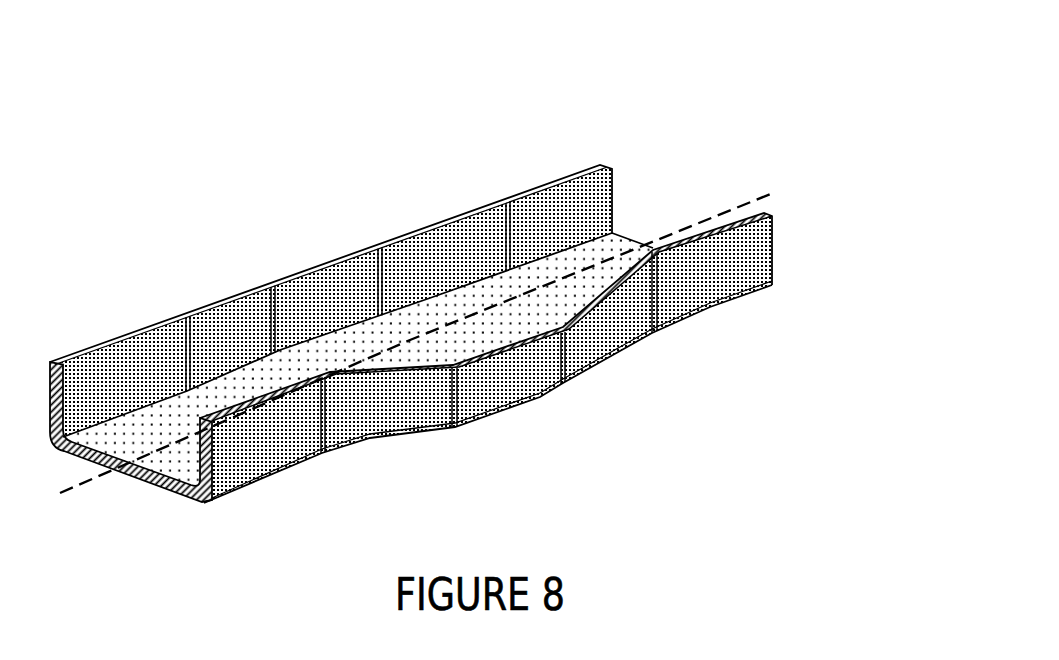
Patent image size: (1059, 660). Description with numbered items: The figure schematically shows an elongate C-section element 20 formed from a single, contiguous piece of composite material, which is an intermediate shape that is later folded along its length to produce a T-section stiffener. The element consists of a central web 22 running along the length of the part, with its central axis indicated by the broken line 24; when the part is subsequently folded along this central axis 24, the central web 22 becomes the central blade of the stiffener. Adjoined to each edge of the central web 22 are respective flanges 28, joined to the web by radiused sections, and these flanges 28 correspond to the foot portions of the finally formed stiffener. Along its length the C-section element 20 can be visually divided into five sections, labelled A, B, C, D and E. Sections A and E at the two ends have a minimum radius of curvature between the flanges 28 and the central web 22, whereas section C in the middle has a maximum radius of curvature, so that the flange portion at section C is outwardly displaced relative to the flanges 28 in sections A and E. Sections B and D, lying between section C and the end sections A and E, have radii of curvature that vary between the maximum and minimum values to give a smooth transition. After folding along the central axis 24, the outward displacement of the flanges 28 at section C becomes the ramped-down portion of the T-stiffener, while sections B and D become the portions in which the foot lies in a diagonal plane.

The C-section element 20 is at (411, 277).
The central web 22 is at (73, 456).
The central axis 24 is at (748, 202).
The flanges 28 is at (117, 342).
The section A is at (128, 418).
The section B is at (250, 375).
The section C is at (348, 333).
The section D is at (475, 295).
The section E is at (568, 253).